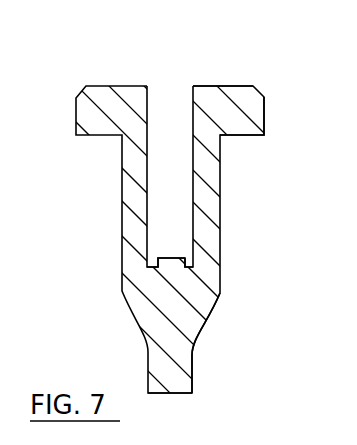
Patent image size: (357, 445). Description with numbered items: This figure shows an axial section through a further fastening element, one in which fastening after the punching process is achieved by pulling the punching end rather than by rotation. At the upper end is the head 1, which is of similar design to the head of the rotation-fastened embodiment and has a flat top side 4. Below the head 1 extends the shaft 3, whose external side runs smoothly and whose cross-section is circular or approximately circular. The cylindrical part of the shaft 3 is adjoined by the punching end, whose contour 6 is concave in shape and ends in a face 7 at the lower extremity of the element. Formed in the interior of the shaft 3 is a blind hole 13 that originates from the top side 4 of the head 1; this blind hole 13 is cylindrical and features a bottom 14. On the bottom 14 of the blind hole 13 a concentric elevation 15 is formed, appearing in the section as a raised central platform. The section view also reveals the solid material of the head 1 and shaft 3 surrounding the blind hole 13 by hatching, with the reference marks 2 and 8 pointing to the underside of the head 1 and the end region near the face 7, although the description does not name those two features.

The head 1 is at (88, 120).
The head 2 is at (250, 138).
The shaft 3 is at (205, 213).
The top side 4 is at (221, 64).
The contour 6 is at (213, 312).
The face 7 is at (189, 396).
The end face 8 is at (148, 396).
The blind hole 13 is at (173, 135).
The bottom 14 is at (190, 266).
The concentric elevation 15 is at (166, 258).